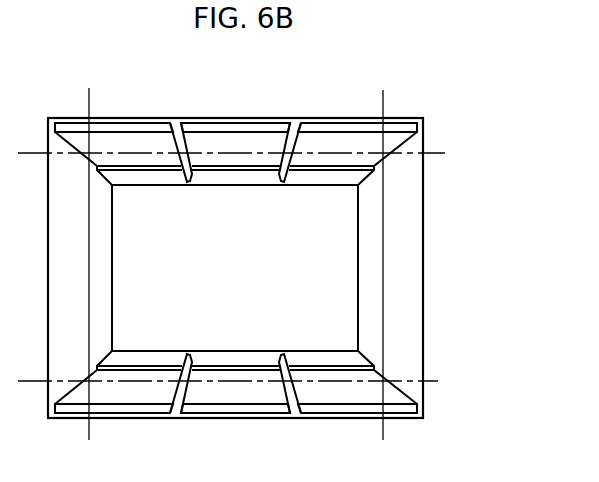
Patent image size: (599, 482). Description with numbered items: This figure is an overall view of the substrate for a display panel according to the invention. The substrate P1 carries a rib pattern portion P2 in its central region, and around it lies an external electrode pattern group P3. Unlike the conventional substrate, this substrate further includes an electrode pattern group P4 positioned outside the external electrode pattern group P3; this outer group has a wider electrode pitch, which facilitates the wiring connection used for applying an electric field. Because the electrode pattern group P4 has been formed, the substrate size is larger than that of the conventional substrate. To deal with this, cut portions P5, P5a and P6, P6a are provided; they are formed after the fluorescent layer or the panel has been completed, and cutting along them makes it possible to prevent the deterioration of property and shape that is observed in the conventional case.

The substrate P1 is at (403, 309).
The rib pattern portion P2 is at (342, 259).
The external electrode pattern group P3 is at (362, 180).
The electrode pattern group P4 is at (142, 126).
The cut portion P5 is at (251, 153).
The cut portion P5a is at (254, 382).
The cut portion P6 is at (383, 250).
The cut portion P6a is at (100, 250).